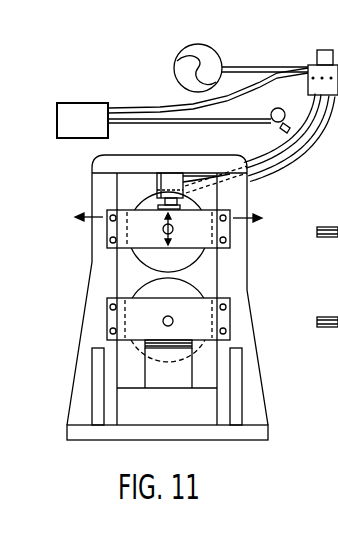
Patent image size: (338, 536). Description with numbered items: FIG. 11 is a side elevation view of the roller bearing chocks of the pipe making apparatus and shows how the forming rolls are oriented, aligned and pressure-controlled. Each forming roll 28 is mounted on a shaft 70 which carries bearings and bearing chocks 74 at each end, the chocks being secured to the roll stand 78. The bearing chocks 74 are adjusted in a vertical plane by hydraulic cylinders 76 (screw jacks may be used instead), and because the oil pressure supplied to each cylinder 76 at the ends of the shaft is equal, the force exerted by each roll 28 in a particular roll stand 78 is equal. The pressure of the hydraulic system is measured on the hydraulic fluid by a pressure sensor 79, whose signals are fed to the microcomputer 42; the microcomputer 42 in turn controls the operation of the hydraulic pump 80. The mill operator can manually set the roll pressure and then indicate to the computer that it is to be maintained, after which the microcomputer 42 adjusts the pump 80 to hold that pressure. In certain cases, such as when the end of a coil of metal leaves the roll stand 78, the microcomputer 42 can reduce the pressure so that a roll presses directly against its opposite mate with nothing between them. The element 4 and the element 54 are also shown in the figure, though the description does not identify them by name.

The base 4 is at (70, 433).
The forming rolls 28 is at (190, 256).
The microcomputer 42 is at (97, 134).
The clamp plate 54 is at (226, 332).
The shaft 70 is at (163, 321).
The bearing chocks 74 is at (327, 277).
The hydraulic cylinders 76 is at (172, 176).
The roll stands 78 is at (100, 274).
The pressure sensor 79 is at (277, 108).
The hydraulic pump 80 is at (203, 52).